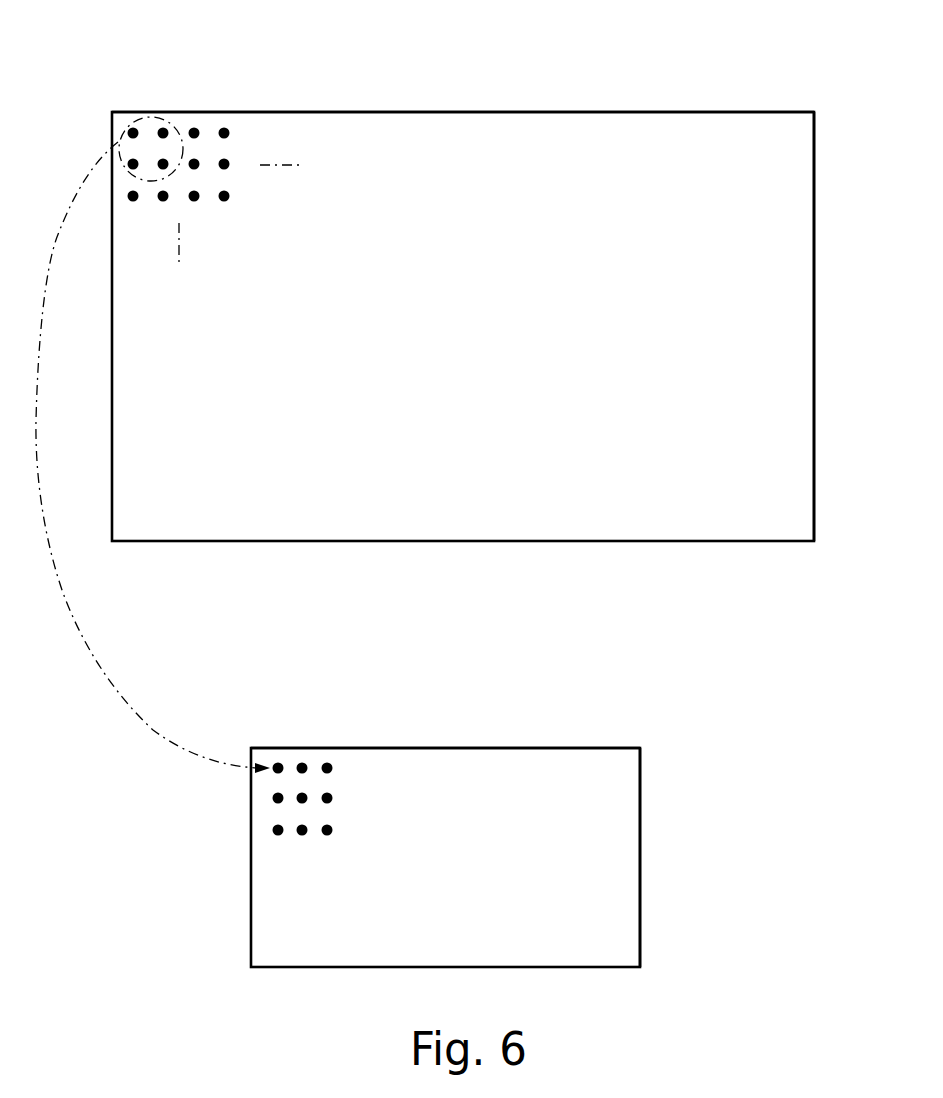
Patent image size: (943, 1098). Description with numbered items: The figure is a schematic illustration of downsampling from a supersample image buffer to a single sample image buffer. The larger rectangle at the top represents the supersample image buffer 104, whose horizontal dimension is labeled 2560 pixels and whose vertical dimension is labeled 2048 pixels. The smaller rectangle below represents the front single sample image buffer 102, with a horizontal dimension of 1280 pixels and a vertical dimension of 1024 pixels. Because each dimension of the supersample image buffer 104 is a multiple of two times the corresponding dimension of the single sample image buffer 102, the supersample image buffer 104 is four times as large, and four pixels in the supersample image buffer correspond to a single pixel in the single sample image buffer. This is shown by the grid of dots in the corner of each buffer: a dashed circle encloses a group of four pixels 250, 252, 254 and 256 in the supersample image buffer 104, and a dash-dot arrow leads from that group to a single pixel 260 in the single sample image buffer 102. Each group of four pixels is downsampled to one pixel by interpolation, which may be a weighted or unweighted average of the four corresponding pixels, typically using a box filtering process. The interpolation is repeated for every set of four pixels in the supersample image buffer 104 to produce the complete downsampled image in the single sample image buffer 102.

The single sample image buffer 102 is at (562, 740).
The supersample image buffer 104 is at (595, 105).
The pixel 250 is at (131, 130).
The pixel 252 is at (162, 130).
The pixel 254 is at (166, 160).
The pixel 256 is at (131, 162).
The single pixel 260 is at (276, 764).
The supersample image buffer width 2560 is at (463, 97).
The supersample image buffer height 2048 is at (846, 326).
The single sample image buffer width 1280 is at (445, 733).
The single sample image buffer height 1024 is at (668, 857).